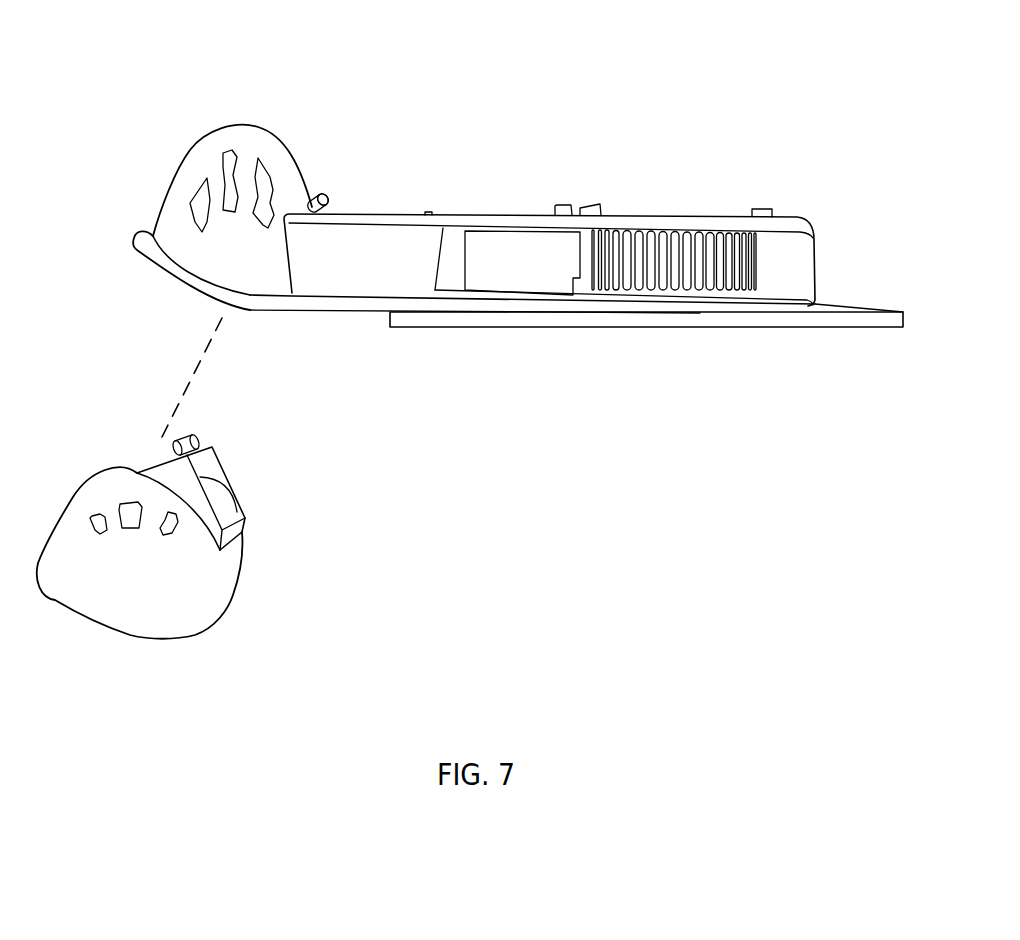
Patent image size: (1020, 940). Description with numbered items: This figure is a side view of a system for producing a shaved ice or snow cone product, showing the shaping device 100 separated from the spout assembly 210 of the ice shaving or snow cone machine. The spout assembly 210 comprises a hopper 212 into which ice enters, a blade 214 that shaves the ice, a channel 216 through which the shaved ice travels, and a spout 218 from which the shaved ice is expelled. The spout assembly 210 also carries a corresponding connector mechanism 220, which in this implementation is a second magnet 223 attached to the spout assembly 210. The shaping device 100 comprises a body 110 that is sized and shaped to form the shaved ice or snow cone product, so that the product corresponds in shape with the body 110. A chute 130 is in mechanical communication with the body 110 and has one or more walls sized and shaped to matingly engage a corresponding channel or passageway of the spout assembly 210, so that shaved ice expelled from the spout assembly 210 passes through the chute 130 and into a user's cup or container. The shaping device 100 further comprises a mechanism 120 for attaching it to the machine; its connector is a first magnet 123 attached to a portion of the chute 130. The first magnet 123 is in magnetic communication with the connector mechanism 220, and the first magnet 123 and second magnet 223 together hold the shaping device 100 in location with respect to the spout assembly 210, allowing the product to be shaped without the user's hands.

The shaping device 100 is at (193, 560).
The body 110 is at (190, 582).
The mechanism 120 is at (206, 462).
The first magnet 123 is at (197, 438).
The chute 130 is at (222, 513).
The spout assembly 210 is at (887, 307).
The hopper 212 is at (655, 203).
The blade 214 is at (710, 292).
The channel 216 is at (328, 265).
The spout 218 is at (190, 153).
The connector mechanism 220 is at (327, 198).
The second magnet 223 is at (327, 198).